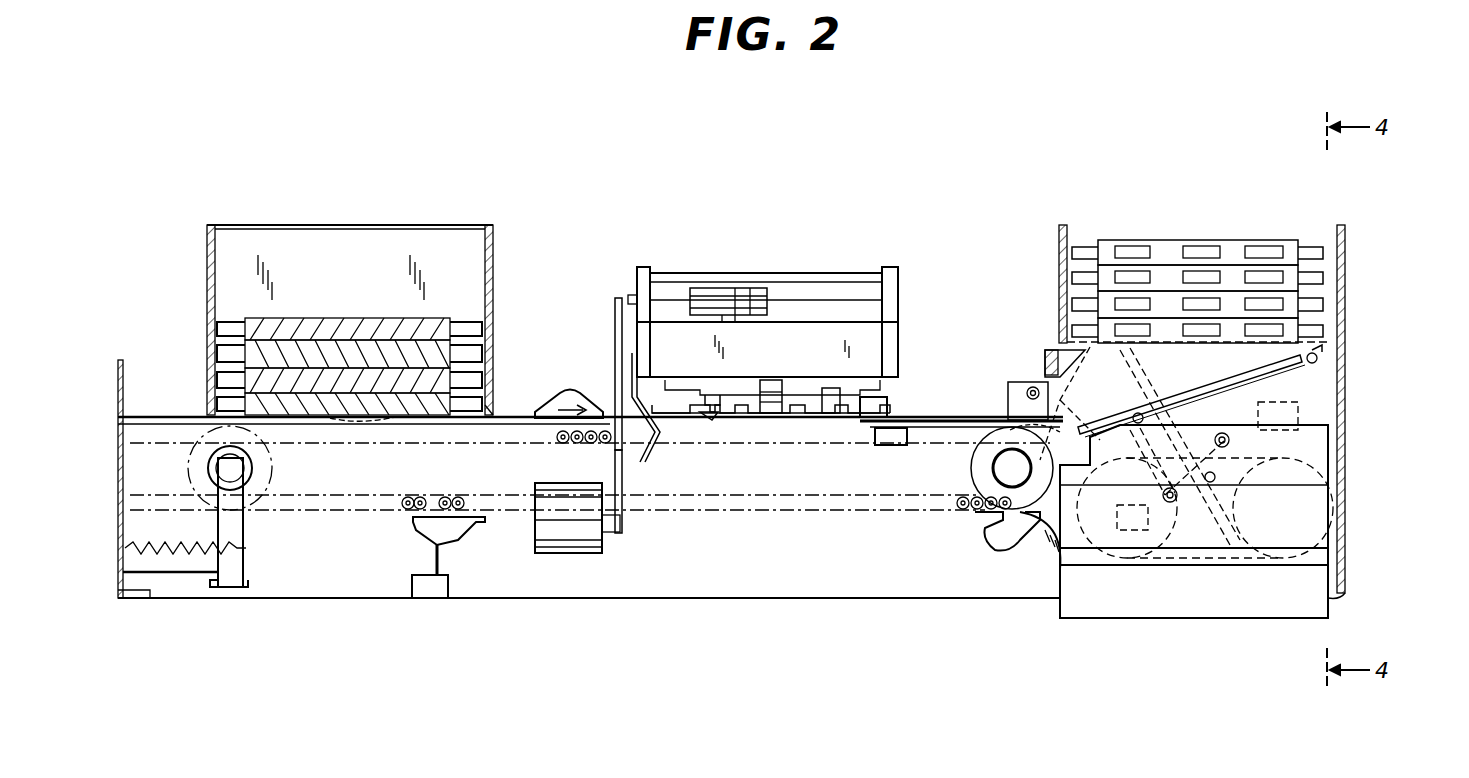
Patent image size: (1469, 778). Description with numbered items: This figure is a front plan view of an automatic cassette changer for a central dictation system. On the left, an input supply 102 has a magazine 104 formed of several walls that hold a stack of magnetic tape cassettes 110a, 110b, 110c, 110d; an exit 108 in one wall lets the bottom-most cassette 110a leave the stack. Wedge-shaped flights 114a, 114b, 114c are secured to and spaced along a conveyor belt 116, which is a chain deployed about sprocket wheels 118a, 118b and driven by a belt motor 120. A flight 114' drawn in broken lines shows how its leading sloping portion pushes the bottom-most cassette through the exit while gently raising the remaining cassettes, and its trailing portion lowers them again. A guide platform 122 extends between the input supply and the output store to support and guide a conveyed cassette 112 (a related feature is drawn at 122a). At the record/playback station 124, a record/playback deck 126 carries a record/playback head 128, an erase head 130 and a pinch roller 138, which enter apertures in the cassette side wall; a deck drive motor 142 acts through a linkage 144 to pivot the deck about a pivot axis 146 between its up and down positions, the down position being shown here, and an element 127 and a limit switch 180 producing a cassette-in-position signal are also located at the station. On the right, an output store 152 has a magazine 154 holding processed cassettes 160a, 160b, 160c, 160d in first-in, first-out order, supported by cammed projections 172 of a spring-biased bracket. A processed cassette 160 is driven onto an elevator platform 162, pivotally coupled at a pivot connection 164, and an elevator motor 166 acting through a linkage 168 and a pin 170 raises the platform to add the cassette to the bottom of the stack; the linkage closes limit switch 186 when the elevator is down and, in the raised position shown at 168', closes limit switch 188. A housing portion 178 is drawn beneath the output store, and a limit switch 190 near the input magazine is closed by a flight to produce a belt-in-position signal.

The input supply 102 is at (345, 190).
The magazine 104 is at (495, 232).
The exit 108 is at (497, 395).
The cassette 110a is at (215, 408).
The cassette 110b is at (215, 385).
The cassette 110c is at (215, 357).
The cassette 110d is at (215, 327).
The cassette 112 is at (889, 405).
The flight 114' is at (372, 444).
The flight 114a is at (572, 392).
The flight 114b is at (450, 545).
The flight 114c is at (985, 545).
The conveyor belt 116 is at (730, 508).
The sprocket wheel 118a is at (972, 453).
The sprocket wheel 118b is at (270, 465).
The belt motor 120 is at (1030, 560).
The guide platform 122 is at (980, 420).
The plate rail 122a is at (770, 428).
The record/playback station 124 is at (912, 372).
The record/playback deck 126 is at (667, 330).
The blade 127 is at (650, 458).
The record/playback head 128 is at (770, 385).
The erase head 130 is at (830, 390).
The pinch roller 138 is at (725, 430).
The deck drive motor 142 is at (580, 555).
The linkage 144 is at (622, 485).
The pivot axis 146 is at (617, 372).
The output store 152 is at (1282, 185).
The magazine 154 is at (1062, 240).
The processed cassette 160 is at (1128, 392).
The cassette 160a is at (1314, 330).
The cassette 160b is at (1314, 303).
The cassette 160c is at (1312, 276).
The cassette 160d is at (1310, 240).
The elevator platform 162 is at (1265, 371).
The pivot connection 164 is at (1326, 360).
The elevator motor 166 is at (1300, 465).
The linkage 168 is at (1161, 461).
The linkage 168' is at (1199, 446).
The pin 170 is at (1181, 457).
The projections 172 is at (1050, 352).
The housing 178 is at (1303, 598).
The limit switch 180 is at (892, 450).
The limit switch 186 is at (1150, 522).
The limit switch 188 is at (1300, 437).
The limit switch 190 is at (412, 580).